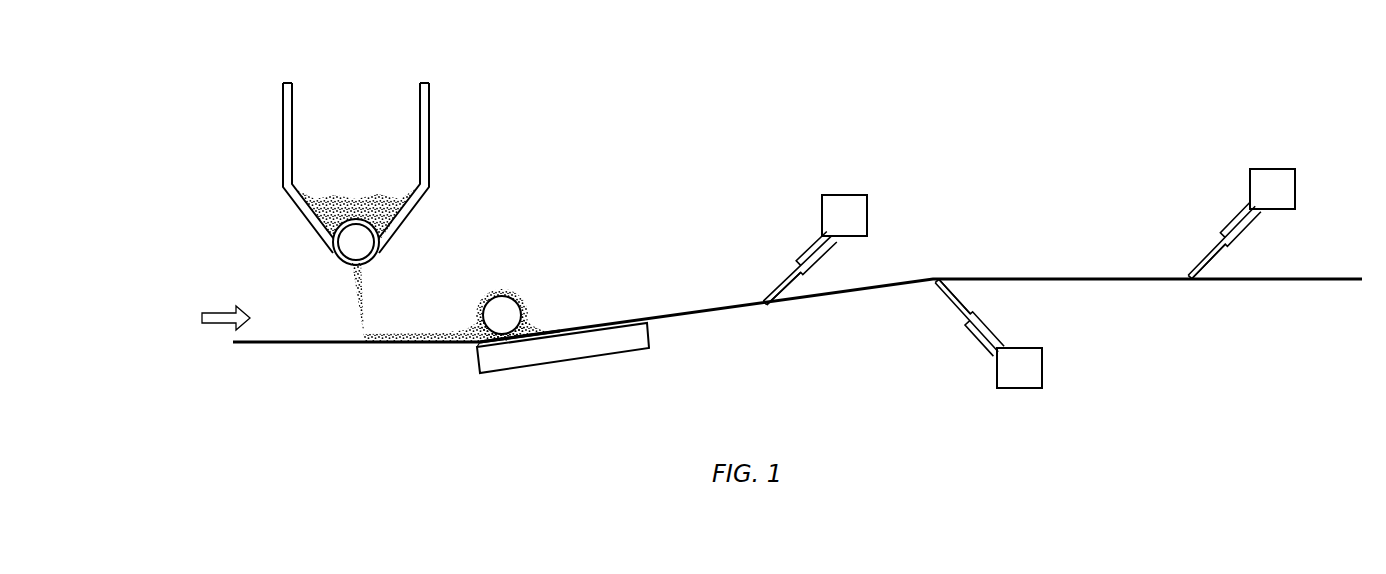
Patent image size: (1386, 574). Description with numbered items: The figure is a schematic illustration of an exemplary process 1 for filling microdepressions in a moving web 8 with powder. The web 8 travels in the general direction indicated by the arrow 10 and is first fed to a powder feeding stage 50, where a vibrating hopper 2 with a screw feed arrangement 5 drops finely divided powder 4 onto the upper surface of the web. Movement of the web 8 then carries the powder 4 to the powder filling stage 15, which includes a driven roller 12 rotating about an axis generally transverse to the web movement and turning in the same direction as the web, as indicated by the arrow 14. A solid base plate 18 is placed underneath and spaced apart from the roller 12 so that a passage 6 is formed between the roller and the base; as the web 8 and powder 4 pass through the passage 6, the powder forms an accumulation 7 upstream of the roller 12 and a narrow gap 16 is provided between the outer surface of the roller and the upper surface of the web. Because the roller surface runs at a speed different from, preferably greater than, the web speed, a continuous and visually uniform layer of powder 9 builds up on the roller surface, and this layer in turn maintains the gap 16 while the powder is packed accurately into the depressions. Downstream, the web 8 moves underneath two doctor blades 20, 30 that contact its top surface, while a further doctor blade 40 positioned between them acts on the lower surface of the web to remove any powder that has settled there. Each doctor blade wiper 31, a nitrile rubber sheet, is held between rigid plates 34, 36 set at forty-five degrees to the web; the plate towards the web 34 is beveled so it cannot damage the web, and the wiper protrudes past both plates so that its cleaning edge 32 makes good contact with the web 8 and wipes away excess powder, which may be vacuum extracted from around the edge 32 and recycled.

The system for manufacturing coated substrate 1 is at (222, 111).
The vibrating hopper 2 is at (407, 125).
The finely divided powder 4 is at (377, 197).
The screw feed arrangement 5 is at (338, 255).
The passage 6 is at (474, 346).
The accumulation of powder 7 is at (458, 326).
The web 8 is at (295, 346).
The continuous layer of powder 9 is at (472, 306).
The arrow indicating direction of web movement 10 is at (222, 308).
The driven roller 12 is at (506, 308).
The arrow indicating roller rotation direction 14 is at (468, 292).
The powder filling stage 15 is at (566, 272).
The narrow gap 16 is at (536, 336).
The solid base plate 18 is at (572, 355).
The doctor blade 20 is at (851, 180).
The doctor blade 30 is at (1281, 155).
The doctor blade wiper 31 is at (790, 290).
The cleaning edge 32 is at (763, 302).
The plate towards the web 34 is at (818, 262).
The other plate 36 is at (806, 242).
The doctor blade 40 is at (1026, 402).
The powder feeding stage 50 is at (360, 84).